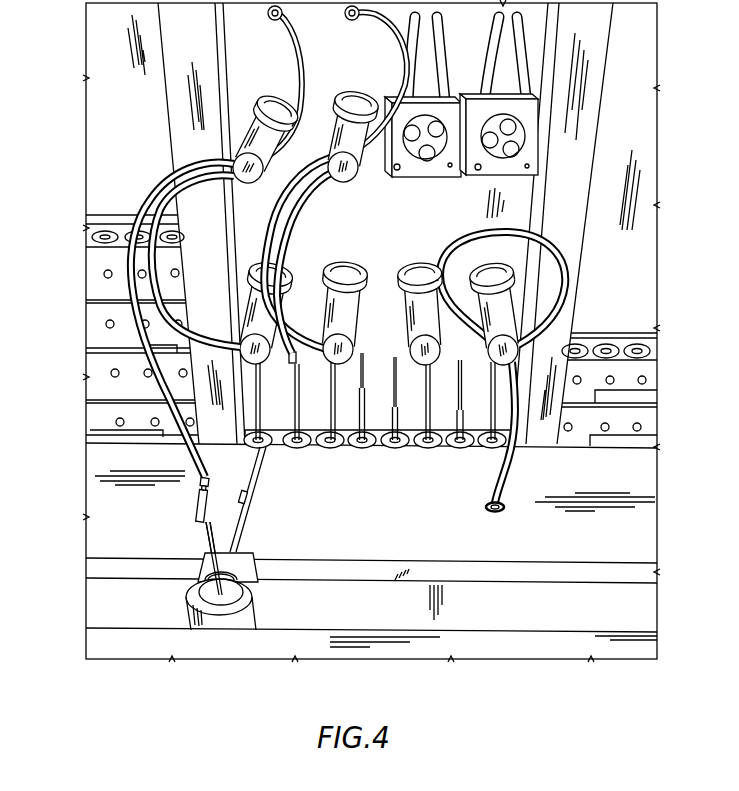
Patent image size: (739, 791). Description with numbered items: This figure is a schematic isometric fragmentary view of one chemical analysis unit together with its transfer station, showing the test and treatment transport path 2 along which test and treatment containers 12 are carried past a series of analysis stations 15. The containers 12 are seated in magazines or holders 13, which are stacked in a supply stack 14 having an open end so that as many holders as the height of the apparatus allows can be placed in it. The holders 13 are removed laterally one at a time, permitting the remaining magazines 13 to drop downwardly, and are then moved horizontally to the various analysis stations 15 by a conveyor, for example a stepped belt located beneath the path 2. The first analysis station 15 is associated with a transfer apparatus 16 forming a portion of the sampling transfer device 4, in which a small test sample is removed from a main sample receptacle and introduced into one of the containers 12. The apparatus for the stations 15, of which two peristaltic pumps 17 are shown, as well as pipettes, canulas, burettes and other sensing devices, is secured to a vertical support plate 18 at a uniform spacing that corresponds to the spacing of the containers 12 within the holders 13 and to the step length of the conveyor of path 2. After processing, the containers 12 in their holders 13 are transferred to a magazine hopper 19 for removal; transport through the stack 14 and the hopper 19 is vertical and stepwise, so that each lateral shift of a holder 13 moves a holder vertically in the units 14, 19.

The test and treatment transport path 2 is at (485, 449).
The sampling transfer device 4 is at (199, 518).
The test and treatment container 12 is at (443, 447).
The magazine holder 13 is at (92, 360).
The supply stack 14 is at (135, 116).
The analysis station 15 is at (372, 397).
The transfer apparatus 16 is at (227, 562).
The peristaltic pump 17 is at (487, 174).
The vertical support plate 18 is at (385, 234).
The magazine hopper 19 is at (634, 124).